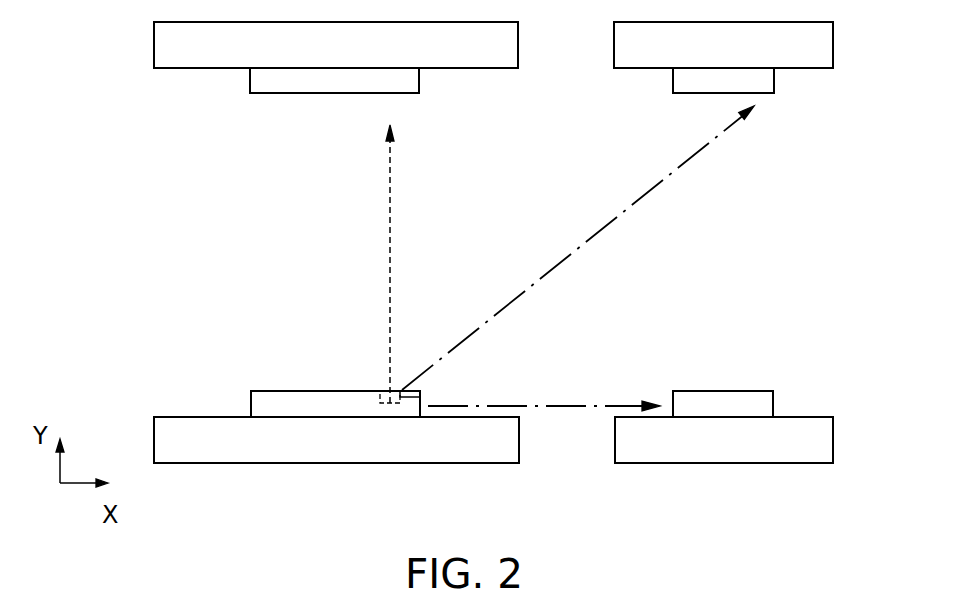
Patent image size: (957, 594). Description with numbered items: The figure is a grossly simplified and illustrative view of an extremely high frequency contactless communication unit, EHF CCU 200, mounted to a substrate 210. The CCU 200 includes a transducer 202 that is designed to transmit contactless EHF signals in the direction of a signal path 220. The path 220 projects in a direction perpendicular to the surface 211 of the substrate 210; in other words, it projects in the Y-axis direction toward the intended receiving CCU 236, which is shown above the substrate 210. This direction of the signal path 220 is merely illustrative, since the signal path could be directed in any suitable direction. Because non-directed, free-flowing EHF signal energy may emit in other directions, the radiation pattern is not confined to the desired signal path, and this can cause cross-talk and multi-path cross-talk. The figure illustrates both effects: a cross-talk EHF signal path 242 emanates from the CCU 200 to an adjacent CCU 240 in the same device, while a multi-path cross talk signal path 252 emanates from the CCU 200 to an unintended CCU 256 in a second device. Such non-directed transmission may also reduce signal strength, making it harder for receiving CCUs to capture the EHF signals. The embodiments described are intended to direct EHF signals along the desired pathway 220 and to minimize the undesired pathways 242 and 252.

The EHF CCU 200 is at (275, 391).
The transducer 202 is at (420, 393).
The substrate 210 is at (480, 463).
The surface 211 is at (173, 417).
The signal path 220 is at (392, 208).
The CCU 236 is at (419, 77).
The CCU 240 is at (776, 400).
The cross-talk EHF signal path 242 is at (575, 406).
The multi-path cross talk signal path 252 is at (607, 218).
The CCU 256 is at (774, 80).